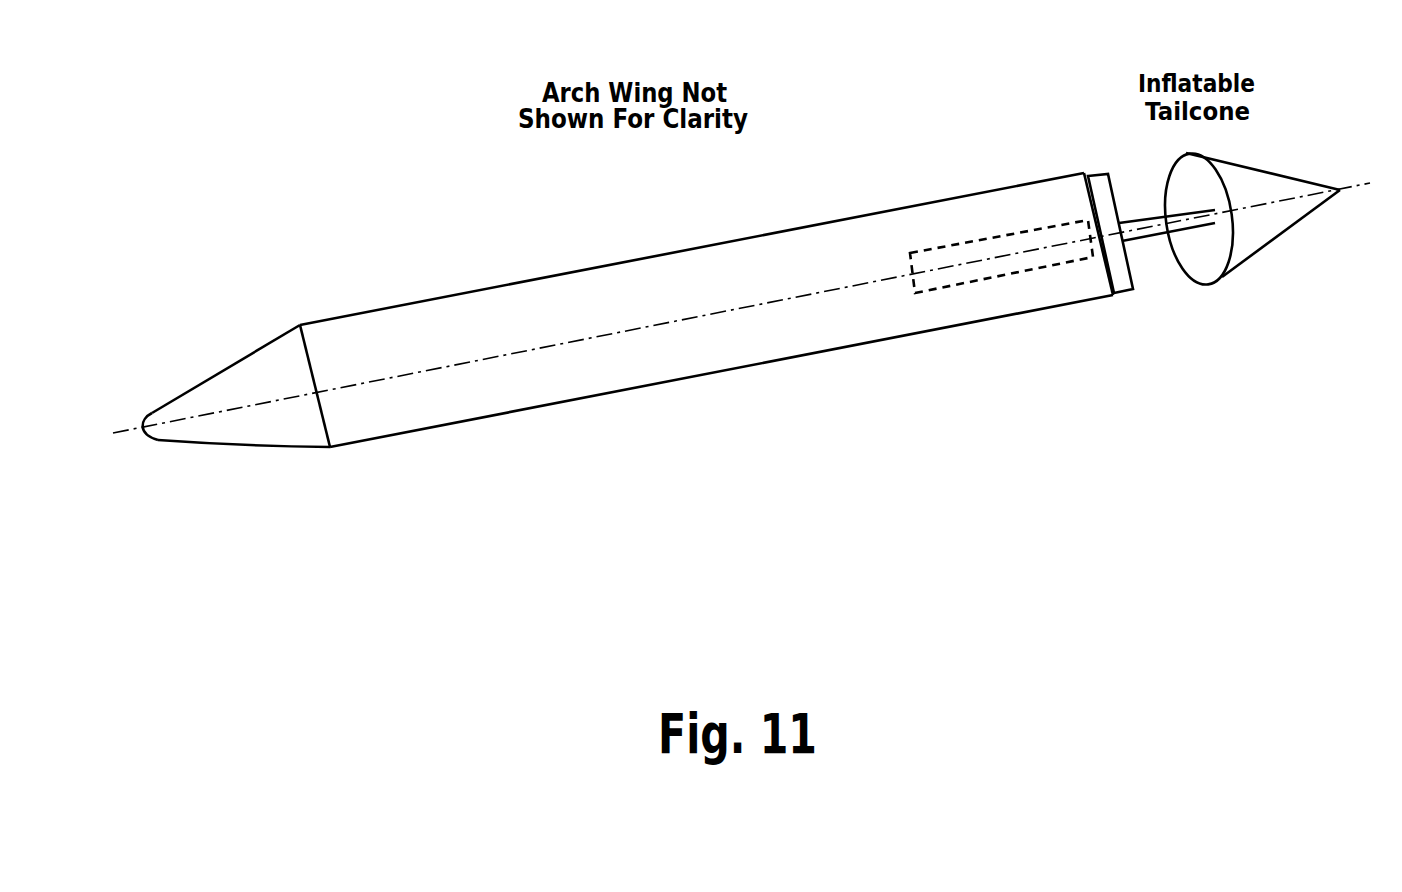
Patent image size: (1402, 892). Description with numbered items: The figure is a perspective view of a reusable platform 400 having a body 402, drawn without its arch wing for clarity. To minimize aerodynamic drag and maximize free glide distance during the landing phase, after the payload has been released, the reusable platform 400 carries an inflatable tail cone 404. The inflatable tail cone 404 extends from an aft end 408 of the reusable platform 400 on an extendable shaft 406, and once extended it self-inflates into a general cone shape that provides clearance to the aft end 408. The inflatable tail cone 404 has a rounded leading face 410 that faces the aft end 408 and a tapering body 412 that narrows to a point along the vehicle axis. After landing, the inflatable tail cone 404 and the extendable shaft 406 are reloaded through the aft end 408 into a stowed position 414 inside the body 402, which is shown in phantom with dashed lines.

The reusable platform 400 is at (744, 275).
The body 402 is at (850, 240).
The inflatable tail cone 404 is at (1298, 225).
The extendable shaft 406 is at (1203, 223).
The aft end 408 is at (1123, 268).
The rounded leading face 410 is at (1225, 240).
The tapering body 412 is at (1266, 221).
The stowed position 414 is at (975, 242).